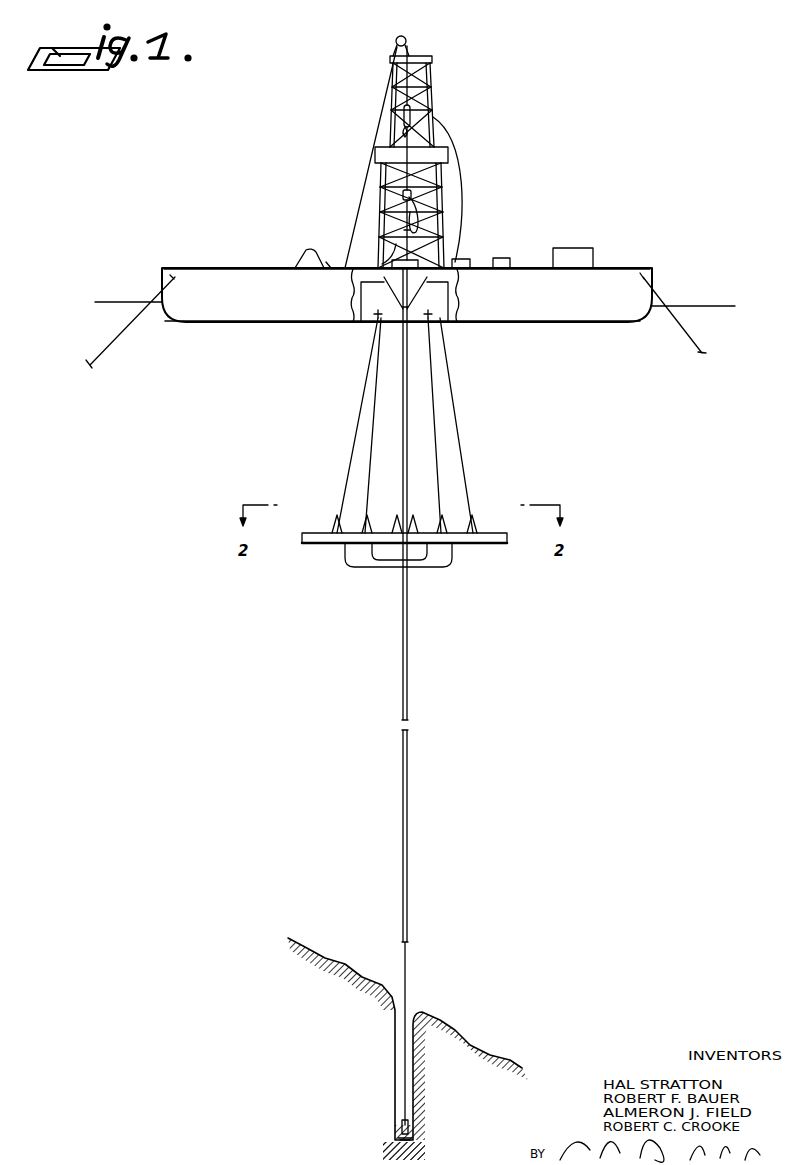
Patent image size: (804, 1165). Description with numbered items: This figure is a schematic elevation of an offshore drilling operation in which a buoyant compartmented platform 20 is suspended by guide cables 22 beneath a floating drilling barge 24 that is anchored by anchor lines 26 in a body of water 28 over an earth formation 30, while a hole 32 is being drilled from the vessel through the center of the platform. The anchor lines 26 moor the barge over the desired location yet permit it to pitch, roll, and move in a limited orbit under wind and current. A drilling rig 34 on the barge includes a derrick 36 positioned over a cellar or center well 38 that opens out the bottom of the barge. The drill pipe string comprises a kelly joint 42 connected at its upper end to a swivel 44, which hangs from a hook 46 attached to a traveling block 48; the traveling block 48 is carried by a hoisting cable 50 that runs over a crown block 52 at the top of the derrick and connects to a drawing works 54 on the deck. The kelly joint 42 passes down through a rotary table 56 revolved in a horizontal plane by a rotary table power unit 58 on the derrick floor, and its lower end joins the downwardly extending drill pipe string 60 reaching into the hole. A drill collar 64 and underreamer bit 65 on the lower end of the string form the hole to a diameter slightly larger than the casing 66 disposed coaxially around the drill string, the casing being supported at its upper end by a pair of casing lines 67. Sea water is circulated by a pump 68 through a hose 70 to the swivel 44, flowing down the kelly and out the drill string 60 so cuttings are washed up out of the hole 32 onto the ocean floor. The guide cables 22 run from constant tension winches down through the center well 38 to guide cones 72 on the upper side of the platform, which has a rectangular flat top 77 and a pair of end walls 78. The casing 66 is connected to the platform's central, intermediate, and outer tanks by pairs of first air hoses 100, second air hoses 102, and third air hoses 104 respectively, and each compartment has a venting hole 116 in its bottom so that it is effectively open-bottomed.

The compartmented platform 20 is at (499, 553).
The guide cables 22 is at (370, 450).
The floating drilling barge 24 is at (622, 325).
The anchor lines 26 is at (745, 322).
The body of water 28 is at (708, 412).
The earth formation 30 is at (338, 962).
The hole 32 is at (410, 1055).
The drilling rig 34 is at (446, 99).
The derrick 36 is at (412, 105).
The center well 38 is at (440, 300).
The kelly joint 42 is at (420, 247).
The swivel 44 is at (375, 203).
The hook 46 is at (414, 195).
The traveling block 48 is at (410, 124).
The hoisting cable 50 is at (373, 113).
The crown block 52 is at (395, 42).
The drawing works 54 is at (302, 244).
The rotary table 56 is at (390, 260).
The rotary table power unit 58 is at (470, 259).
The drill pipe string 60 is at (398, 340).
The drill collar 64 is at (412, 1123).
The underreamer bit 65 is at (424, 1141).
The casing 66 is at (410, 700).
The casing lines 67 is at (358, 280).
The pump 68 is at (560, 258).
The hose 70 is at (464, 195).
The guide cones 72 is at (338, 522).
The flat top 77 is at (334, 530).
The end walls 78 is at (302, 540).
The first air hoses 100 is at (380, 562).
The second air hoses 102 is at (424, 562).
The third air hoses 104 is at (347, 560).
The venting hole 116 is at (345, 555).